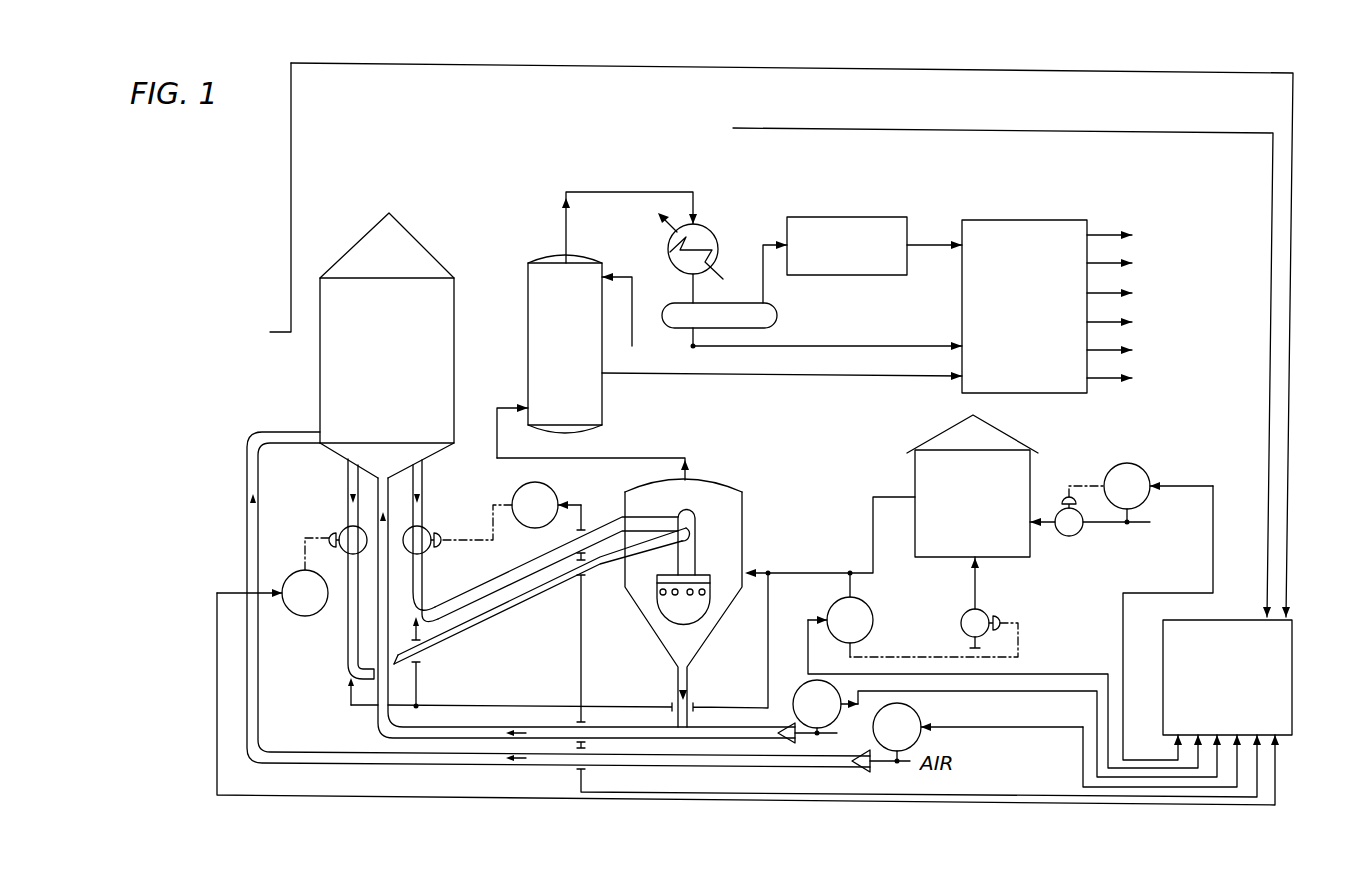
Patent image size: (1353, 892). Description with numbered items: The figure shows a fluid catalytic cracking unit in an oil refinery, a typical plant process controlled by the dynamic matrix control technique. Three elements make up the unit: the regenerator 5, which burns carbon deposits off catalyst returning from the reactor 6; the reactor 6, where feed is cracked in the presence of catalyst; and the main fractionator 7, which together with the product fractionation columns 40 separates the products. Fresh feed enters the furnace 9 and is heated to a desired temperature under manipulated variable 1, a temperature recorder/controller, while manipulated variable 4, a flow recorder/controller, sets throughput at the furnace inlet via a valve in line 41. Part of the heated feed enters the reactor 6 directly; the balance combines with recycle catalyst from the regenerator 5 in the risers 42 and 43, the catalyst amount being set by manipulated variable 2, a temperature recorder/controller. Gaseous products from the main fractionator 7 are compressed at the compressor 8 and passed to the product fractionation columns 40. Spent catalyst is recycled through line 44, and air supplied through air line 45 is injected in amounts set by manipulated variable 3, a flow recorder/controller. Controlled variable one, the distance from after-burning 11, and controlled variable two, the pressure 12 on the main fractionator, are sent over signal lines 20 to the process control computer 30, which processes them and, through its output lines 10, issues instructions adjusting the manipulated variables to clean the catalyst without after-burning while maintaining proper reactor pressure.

The manipulated variable 1 (temperature recorder/controller) 1 is at (869, 608).
The manipulated variable 2 (temperature recorder/controller) 2 is at (512, 498).
The manipulated variable 3 (flow recorder/controller) 3 is at (835, 721).
The manipulated variable 4 (flow recorder/controller) 4 is at (1148, 474).
The regenerator 5 is at (380, 407).
The reactor 6 is at (727, 498).
The main fractionator 7 is at (558, 389).
The compressor 8 is at (888, 275).
The furnace 9 is at (965, 532).
The input signal lines to process control computer 10 is at (1162, 752).
The distance from after-burning 11 is at (338, 372).
The pressure 12 is at (725, 313).
The signal lines to process control computer 20 is at (1262, 373).
The process control computer 30 is at (1216, 727).
The product fractionation columns 40 is at (1012, 384).
The fuel line valve 41 is at (1138, 524).
The riser 42 is at (492, 582).
The riser 43 is at (500, 620).
The line 44 is at (377, 722).
The air line 45 is at (318, 750).